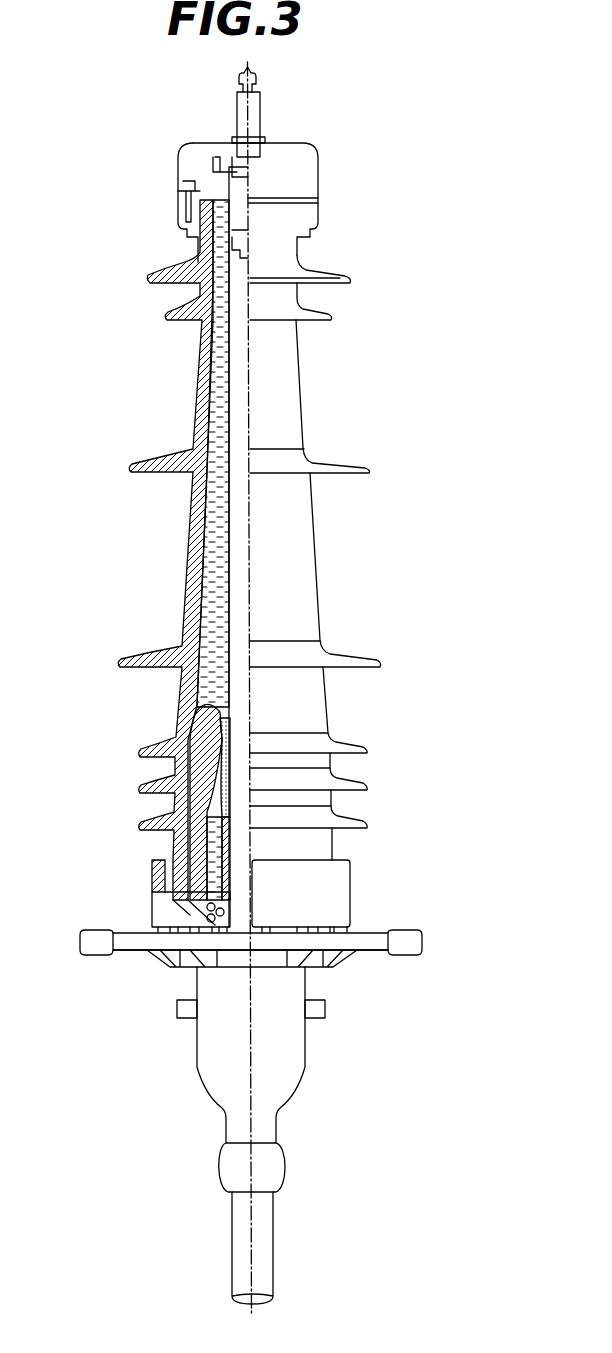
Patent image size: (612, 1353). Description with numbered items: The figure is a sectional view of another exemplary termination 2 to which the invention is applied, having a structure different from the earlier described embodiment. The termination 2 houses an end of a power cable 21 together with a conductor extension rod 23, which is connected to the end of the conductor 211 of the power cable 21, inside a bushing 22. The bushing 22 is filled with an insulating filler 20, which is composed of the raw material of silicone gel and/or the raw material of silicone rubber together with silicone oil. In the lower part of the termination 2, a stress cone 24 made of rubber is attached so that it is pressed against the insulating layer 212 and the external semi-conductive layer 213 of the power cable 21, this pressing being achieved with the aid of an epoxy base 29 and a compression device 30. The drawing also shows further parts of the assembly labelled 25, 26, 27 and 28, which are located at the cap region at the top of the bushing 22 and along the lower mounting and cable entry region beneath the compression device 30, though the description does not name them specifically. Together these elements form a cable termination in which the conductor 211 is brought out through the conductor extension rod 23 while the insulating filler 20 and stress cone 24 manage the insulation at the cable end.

The termination 2 is at (247, 688).
The insulating filler 20 is at (157, 550).
The power cable 21 is at (232, 1245).
The bushing 22 is at (198, 360).
The conductor extension rod 23 is at (235, 102).
The stress cone 24 is at (193, 728).
The cap fixing member 25 is at (182, 187).
The mounting flange 26 is at (123, 943).
The cable gland body 27 is at (197, 1063).
The cable seal 28 is at (220, 1168).
The epoxy base 29 is at (203, 758).
The compression device 30 is at (173, 892).
The conductor 211 is at (238, 246).
The insulating layer 212 is at (230, 613).
The external semi-conductive layer 213 is at (242, 808).